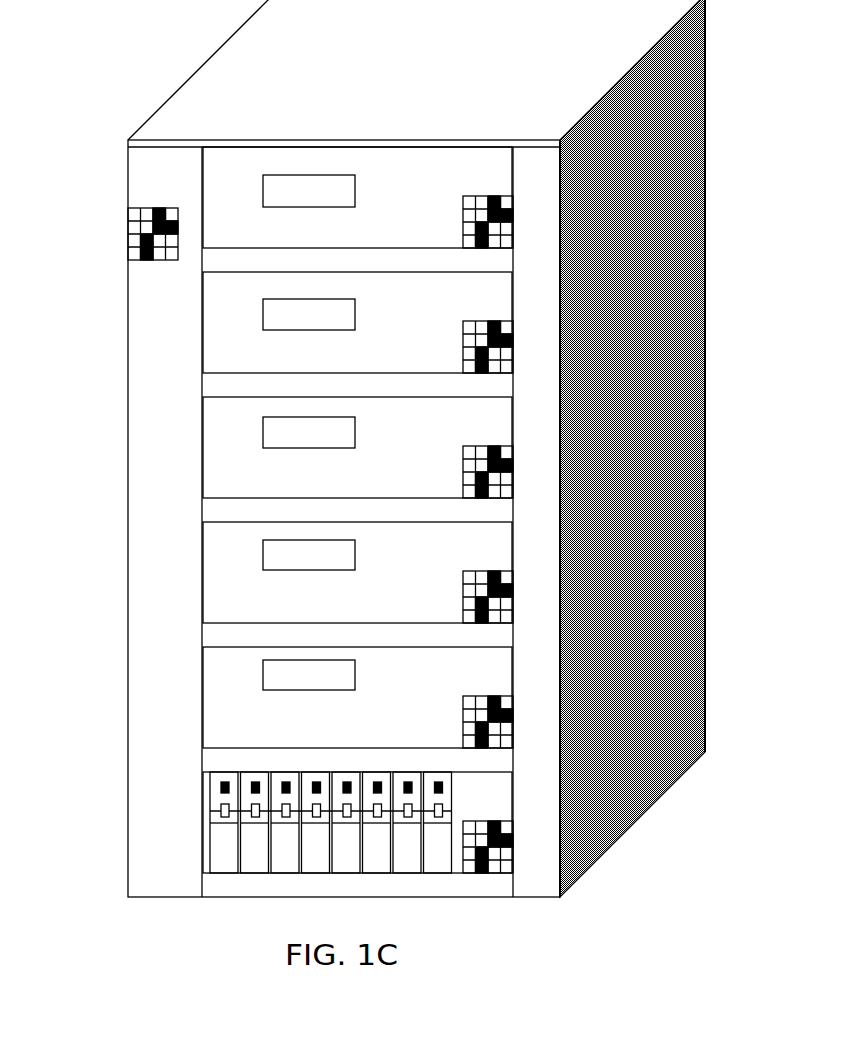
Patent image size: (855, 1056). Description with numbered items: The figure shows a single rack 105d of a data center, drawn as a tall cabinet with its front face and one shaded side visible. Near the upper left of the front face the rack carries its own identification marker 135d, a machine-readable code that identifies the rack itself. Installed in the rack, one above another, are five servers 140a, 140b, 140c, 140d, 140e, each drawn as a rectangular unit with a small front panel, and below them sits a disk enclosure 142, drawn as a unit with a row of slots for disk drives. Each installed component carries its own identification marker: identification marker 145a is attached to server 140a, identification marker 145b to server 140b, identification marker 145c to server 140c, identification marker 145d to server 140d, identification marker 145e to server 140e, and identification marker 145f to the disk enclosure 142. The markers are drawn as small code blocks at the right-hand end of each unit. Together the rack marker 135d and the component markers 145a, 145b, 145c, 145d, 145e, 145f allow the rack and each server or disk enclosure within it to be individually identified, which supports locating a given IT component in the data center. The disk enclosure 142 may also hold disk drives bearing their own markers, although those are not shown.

The rack 105d is at (416, 448).
The identification marker 135d is at (128, 233).
The server 140a is at (357, 197).
The server 140b is at (357, 322).
The server 140c is at (357, 447).
The server 140d is at (357, 572).
The server 140e is at (357, 697).
The disk enclosure 142 is at (205, 819).
The identification marker 145a is at (513, 220).
The identification marker 145b is at (513, 340).
The identification marker 145c is at (513, 462).
The identification marker 145d is at (513, 590).
The identification marker 145e is at (513, 712).
The identification marker 145f is at (513, 835).